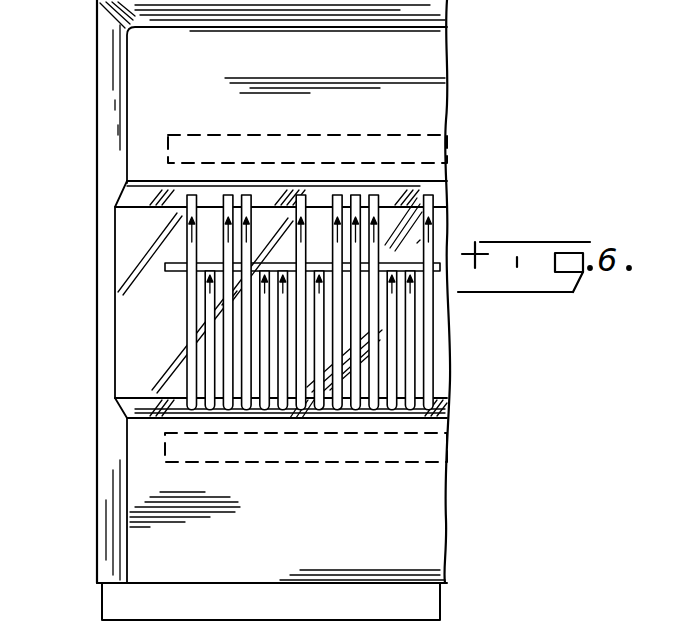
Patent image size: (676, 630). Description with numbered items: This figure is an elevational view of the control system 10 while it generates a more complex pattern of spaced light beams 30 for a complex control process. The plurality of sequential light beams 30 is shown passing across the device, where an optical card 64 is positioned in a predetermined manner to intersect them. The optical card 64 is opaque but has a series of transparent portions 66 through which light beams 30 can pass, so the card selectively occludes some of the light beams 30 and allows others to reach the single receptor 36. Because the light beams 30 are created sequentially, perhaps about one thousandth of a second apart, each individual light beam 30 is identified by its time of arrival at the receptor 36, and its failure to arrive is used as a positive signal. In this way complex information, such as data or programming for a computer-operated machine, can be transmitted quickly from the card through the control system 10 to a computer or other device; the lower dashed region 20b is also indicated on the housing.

The display module housing 10 is at (93, 104).
The circuit board 20b is at (432, 448).
The terminal pins 30 is at (187, 307).
The connector 36 is at (449, 146).
The pin retaining bar 64 is at (420, 242).
The retaining clip 66 is at (182, 272).